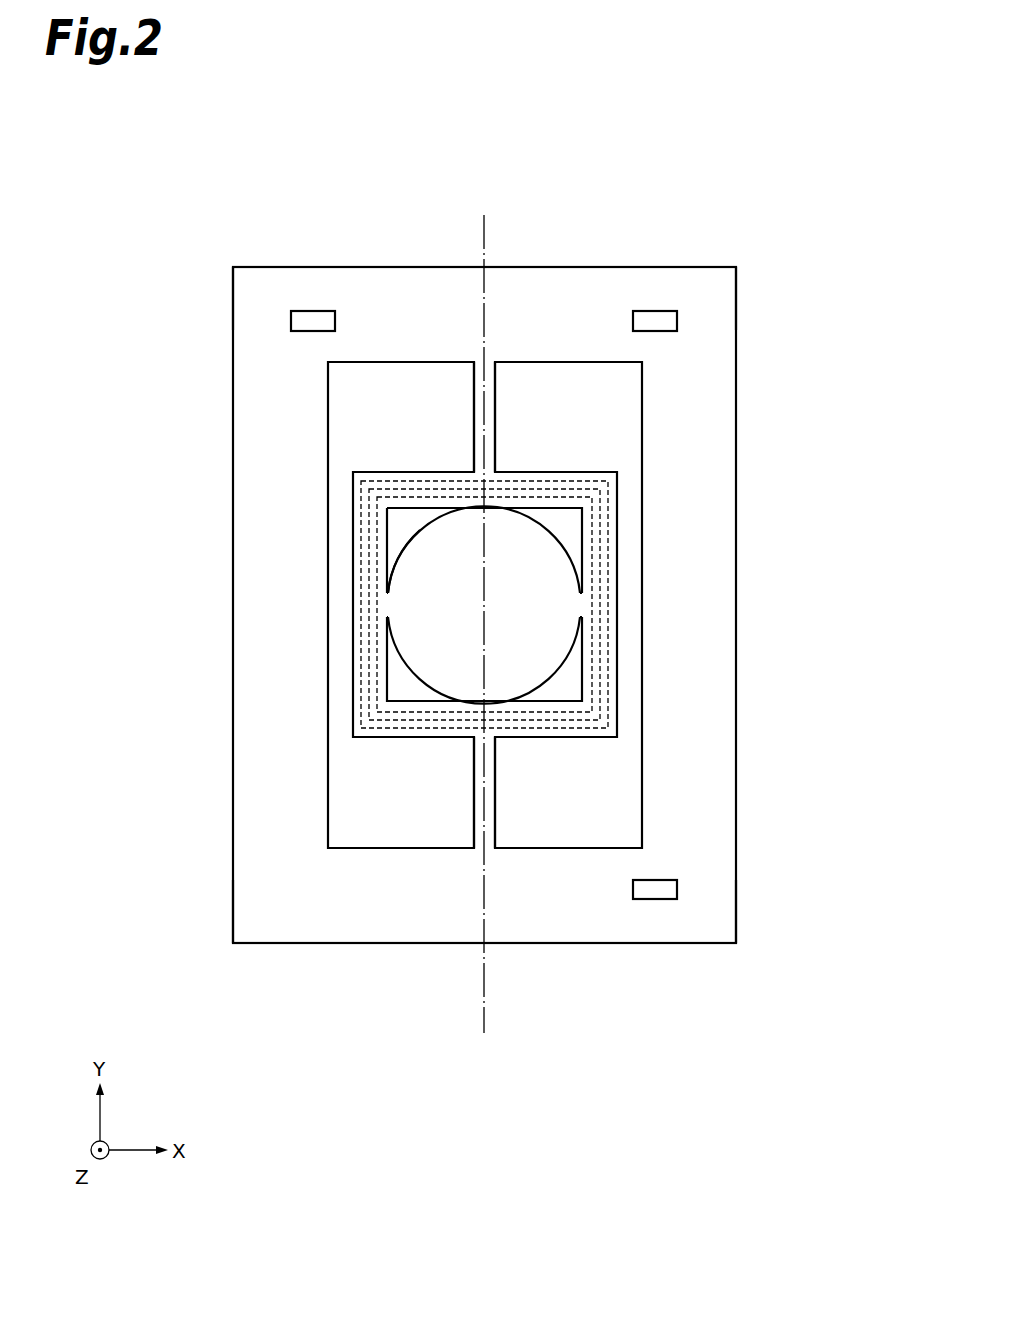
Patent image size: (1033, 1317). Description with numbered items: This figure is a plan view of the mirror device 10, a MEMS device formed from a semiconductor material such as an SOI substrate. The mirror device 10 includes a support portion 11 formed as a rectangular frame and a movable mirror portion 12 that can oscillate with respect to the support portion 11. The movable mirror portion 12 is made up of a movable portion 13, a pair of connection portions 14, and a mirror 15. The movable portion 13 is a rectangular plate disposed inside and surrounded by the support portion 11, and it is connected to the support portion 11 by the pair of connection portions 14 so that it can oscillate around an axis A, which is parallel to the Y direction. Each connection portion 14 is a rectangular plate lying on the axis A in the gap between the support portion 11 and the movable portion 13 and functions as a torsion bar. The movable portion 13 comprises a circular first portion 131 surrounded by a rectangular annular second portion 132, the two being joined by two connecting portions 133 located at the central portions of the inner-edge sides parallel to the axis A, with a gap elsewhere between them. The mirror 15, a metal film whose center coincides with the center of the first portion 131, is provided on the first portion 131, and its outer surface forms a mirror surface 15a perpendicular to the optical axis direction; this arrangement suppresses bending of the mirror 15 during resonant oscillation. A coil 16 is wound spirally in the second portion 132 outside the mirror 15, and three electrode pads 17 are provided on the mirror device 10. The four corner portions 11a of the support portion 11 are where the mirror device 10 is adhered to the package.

The mirror device 10 is at (495, 522).
The support portion 11 is at (265, 418).
The corner portions 11a is at (250, 297).
The movable mirror portion 12 is at (595, 465).
The movable portion 13 is at (494, 590).
The first portion 131 is at (563, 648).
The second portion 132 is at (618, 537).
The connecting portions 133 is at (580, 592).
The connection portions 14 is at (493, 405).
The mirror 15 is at (530, 552).
The mirror surface 15a is at (423, 563).
The coil 16 is at (397, 729).
The electrode pads 17 is at (325, 311).
The axis A is at (482, 250).